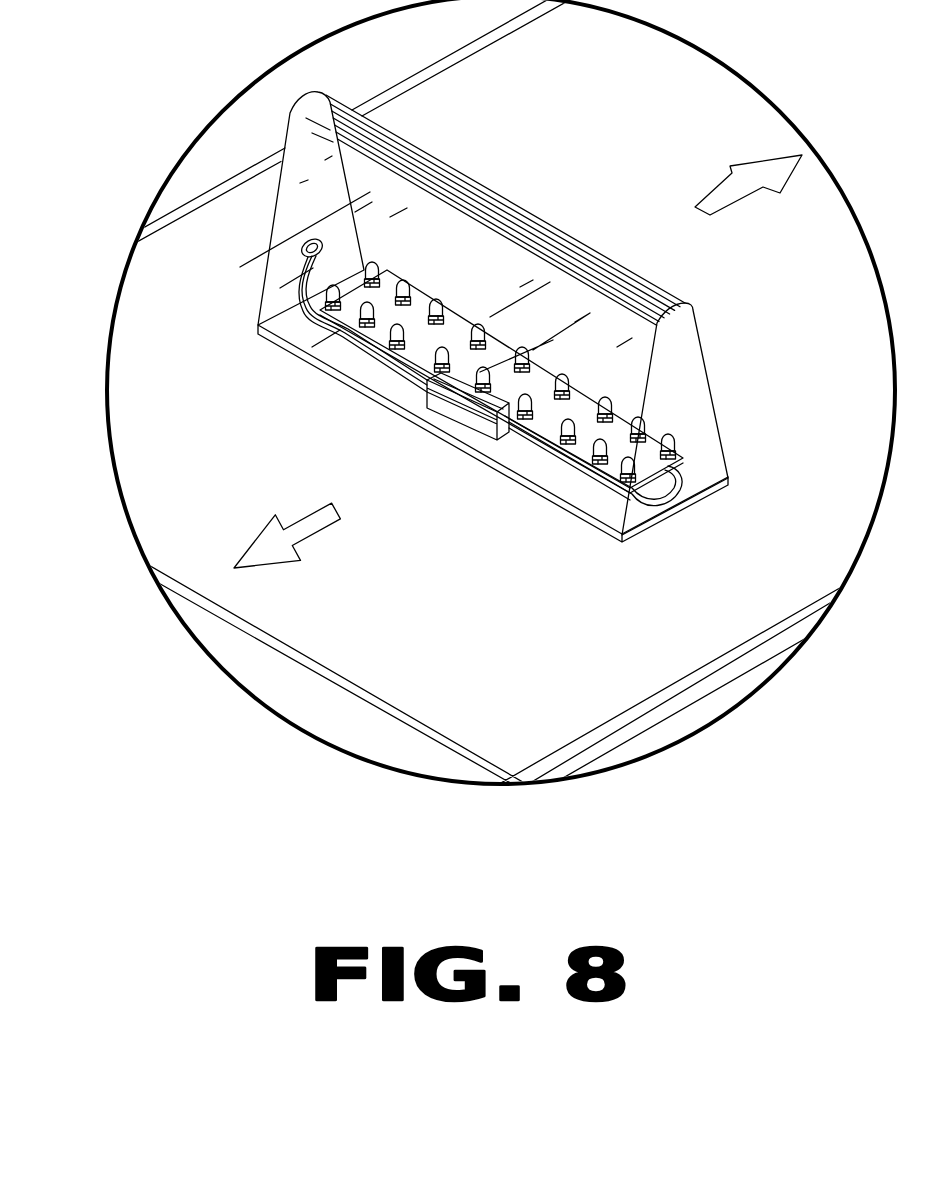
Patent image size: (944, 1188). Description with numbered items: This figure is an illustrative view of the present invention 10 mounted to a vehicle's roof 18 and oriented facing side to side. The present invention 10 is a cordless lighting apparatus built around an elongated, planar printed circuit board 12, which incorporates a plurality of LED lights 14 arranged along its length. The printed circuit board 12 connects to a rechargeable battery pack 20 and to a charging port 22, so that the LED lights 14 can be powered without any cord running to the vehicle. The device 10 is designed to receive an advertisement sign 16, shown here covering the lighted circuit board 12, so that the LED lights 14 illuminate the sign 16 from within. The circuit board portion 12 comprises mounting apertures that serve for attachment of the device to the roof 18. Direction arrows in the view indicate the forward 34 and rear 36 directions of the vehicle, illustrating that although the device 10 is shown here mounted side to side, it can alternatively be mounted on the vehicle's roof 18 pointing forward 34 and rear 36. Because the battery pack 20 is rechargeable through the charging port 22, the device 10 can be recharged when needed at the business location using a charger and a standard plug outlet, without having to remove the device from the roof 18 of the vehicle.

The present invention 10 is at (127, 135).
The printed circuit board 12 is at (388, 333).
The LED lights 14 is at (575, 437).
The advertisement sign 16 is at (515, 190).
The vehicle's roof 18 is at (630, 649).
The rechargeable battery pack 20 is at (495, 478).
The charging port 22 is at (300, 240).
The forward 34 is at (288, 527).
The rear 36 is at (716, 194).